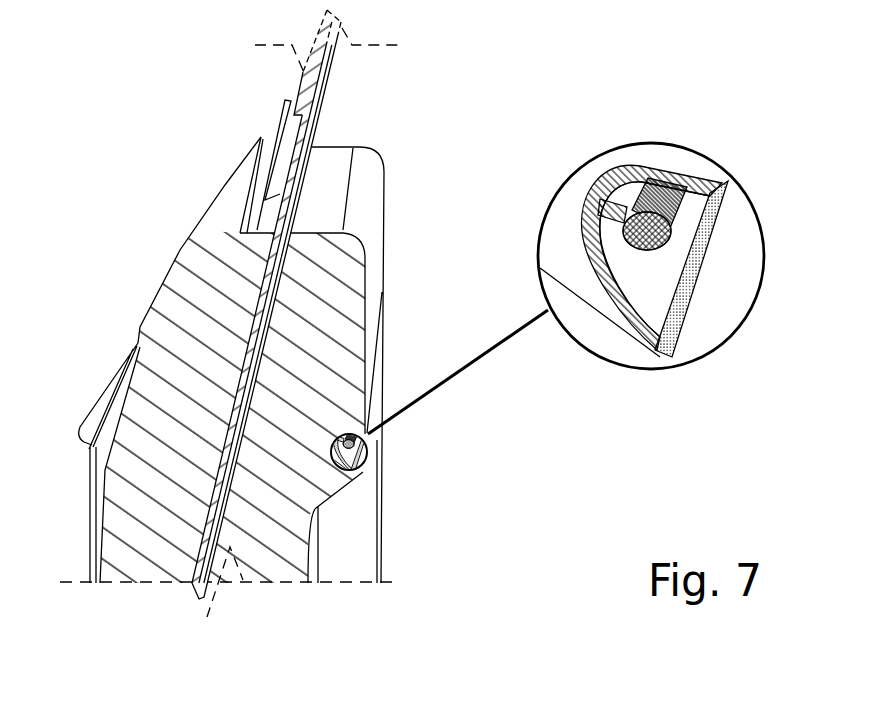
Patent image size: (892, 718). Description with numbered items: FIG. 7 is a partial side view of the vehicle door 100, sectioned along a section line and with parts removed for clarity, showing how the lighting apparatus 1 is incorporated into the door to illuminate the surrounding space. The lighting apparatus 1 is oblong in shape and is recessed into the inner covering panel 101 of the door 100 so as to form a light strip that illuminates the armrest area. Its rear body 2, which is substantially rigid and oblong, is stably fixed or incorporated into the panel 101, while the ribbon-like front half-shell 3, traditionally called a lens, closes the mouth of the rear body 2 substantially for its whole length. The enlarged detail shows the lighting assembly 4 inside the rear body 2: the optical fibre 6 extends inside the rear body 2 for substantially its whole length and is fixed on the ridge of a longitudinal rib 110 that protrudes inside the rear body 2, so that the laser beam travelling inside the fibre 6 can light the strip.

The vehicle door 100 is at (133, 310).
The inner covering panel 101 is at (343, 507).
The longitudinal rib 110 is at (620, 202).
The lighting apparatus 1 is at (703, 282).
The rear body 2 is at (580, 247).
The front half-shell 3 is at (707, 247).
The lighting assembly 4 is at (668, 275).
The optical fibre 6 is at (673, 200).